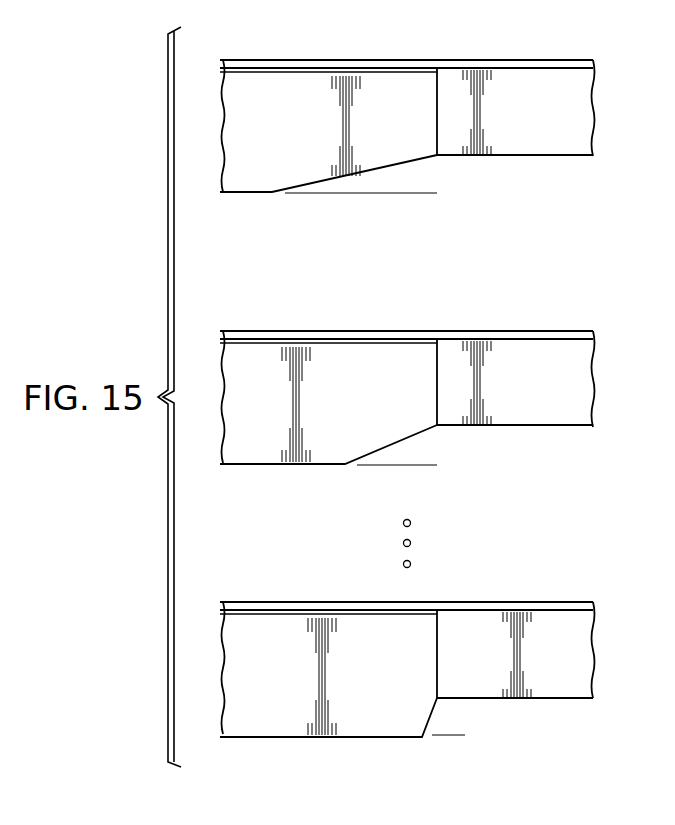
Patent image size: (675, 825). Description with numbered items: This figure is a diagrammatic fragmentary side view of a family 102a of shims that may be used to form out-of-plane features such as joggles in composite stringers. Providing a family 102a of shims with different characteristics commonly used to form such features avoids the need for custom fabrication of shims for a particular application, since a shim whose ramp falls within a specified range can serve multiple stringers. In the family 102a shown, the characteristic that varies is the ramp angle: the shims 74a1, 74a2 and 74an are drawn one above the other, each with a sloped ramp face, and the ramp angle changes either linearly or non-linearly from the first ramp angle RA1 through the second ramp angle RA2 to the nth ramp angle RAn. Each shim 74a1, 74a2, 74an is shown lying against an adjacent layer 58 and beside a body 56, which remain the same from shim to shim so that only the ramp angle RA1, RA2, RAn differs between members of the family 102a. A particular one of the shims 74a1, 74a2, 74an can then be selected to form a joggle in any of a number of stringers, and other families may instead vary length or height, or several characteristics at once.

The family of shims 102a is at (138, 101).
The coating layer 58 is at (475, 60).
The substrate 56 is at (522, 147).
The first ramp portion 74a1 is at (255, 183).
The second ramp portion 74a2 is at (260, 455).
The nth ramp portion 74an is at (283, 723).
The first ramp angle RA1 is at (404, 118).
The second ramp angle RA2 is at (397, 402).
The nth ramp angle RAn is at (403, 708).